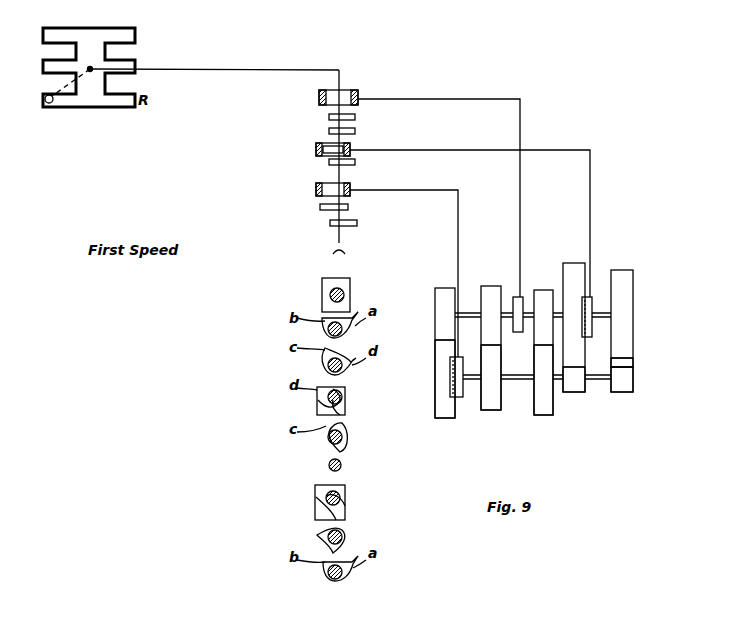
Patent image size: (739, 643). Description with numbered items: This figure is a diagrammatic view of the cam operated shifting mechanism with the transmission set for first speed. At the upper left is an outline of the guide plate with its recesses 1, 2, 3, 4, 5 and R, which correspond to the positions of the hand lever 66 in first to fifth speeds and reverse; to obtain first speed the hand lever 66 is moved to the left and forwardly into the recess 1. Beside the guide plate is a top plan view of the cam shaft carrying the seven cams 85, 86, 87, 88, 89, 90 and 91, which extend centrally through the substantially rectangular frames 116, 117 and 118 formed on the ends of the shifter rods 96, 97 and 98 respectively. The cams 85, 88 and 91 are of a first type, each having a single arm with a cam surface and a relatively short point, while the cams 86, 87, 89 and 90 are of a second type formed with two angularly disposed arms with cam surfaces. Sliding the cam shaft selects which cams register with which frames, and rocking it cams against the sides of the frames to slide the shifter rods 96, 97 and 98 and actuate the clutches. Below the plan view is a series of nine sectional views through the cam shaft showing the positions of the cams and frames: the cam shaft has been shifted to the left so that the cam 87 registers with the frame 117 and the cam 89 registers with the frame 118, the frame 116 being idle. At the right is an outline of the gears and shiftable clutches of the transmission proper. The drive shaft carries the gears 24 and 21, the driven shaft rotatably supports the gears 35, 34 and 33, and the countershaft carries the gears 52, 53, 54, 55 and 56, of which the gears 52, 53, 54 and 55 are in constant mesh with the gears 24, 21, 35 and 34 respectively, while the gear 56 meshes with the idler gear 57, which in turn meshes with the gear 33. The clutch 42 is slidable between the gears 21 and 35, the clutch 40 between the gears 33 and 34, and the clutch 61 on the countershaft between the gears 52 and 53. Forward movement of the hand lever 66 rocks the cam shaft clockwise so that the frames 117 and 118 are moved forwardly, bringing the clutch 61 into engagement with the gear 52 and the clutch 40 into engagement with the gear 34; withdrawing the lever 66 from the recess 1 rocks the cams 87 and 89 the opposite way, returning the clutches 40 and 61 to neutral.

The recess 1 is at (53, 100).
The recess 2 is at (195, 82).
The recess 3 is at (53, 69).
The recess 4 is at (126, 36).
The recess 5 is at (83, 67).
The hand lever 66 is at (51, 103).
The frame 116 is at (358, 93).
The shifter rod 96 is at (464, 88).
The cam 85 is at (355, 117).
The cam 86 is at (355, 131).
The cam 87 is at (330, 146).
The frame 117 is at (316, 150).
The shifter rod 97 is at (462, 138).
The cam 88 is at (355, 162).
The cam 89 is at (345, 186).
The frame 118 is at (316, 191).
The shifter rod 98 is at (459, 180).
The cam 90 is at (320, 207).
The cam 91 is at (330, 223).
The gear 24 is at (443, 288).
The gear 21 is at (492, 286).
The gear 35 is at (543, 290).
The gear 34 is at (573, 263).
The gear 33 is at (624, 270).
The clutch 42 is at (518, 332).
The clutch 40 is at (587, 337).
The idler gear 57 is at (633, 362).
The clutch 61 is at (457, 397).
The gear 52 is at (445, 418).
The gear 53 is at (492, 410).
The gear 54 is at (543, 415).
The gear 55 is at (580, 392).
The gear 56 is at (622, 392).